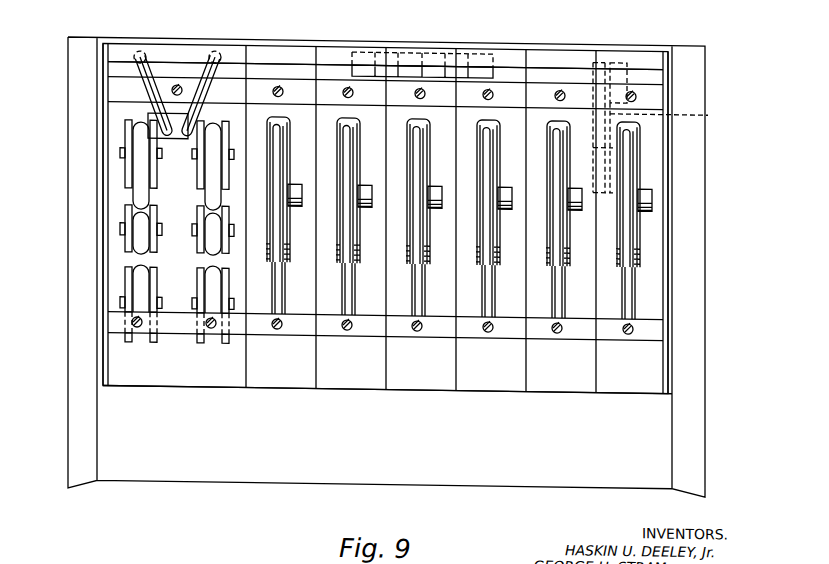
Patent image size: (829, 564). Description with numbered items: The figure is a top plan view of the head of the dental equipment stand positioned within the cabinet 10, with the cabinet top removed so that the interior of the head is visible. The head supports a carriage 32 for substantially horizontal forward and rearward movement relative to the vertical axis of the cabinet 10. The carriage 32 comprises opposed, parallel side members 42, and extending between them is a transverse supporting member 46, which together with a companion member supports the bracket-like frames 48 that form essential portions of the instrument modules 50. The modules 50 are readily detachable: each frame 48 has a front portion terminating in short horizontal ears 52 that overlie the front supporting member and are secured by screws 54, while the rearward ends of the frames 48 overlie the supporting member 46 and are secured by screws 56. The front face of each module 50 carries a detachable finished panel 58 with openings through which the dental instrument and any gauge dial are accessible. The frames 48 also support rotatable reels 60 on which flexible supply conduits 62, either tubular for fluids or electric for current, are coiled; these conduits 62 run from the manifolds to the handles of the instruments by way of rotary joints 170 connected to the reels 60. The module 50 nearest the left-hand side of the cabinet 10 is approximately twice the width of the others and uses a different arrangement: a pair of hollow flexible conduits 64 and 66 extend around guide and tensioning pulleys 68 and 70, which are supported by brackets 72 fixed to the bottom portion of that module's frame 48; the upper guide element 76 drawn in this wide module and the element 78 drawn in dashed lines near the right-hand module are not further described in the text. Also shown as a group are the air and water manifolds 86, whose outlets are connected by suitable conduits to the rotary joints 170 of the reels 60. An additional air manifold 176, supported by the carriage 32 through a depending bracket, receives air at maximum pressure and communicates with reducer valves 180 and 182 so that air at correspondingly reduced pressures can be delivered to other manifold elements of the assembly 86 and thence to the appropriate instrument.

The cabinet 10 is at (62, 415).
The carriage 32 is at (653, 163).
The side members 42 is at (107, 229).
The transverse supporting member 46 is at (540, 66).
The bracket-like frames 48 is at (121, 86).
The instrument modules 50 is at (170, 376).
The ears 52 is at (293, 316).
The screws 54 is at (277, 318).
The screws 56 is at (278, 83).
The finished panel 58 is at (253, 352).
The rotatable reels 60 is at (288, 168).
The supply conduits 62 is at (350, 280).
The flexible conduit 64 is at (138, 158).
The flexible conduit 66 is at (213, 142).
The guide and tensioning pulleys 68 is at (127, 125).
The guide and tensioning pulleys 70 is at (128, 211).
The brackets 72 is at (122, 165).
The V-shaped guide arms 76 is at (205, 68).
The actuator rod 78 is at (603, 42).
The air and water manifolds 86 is at (422, 42).
The rotary joints 170 is at (294, 206).
The additional air manifold 176 is at (676, 104).
The reducer valve 180 is at (593, 124).
The reducer valve 182 is at (598, 188).